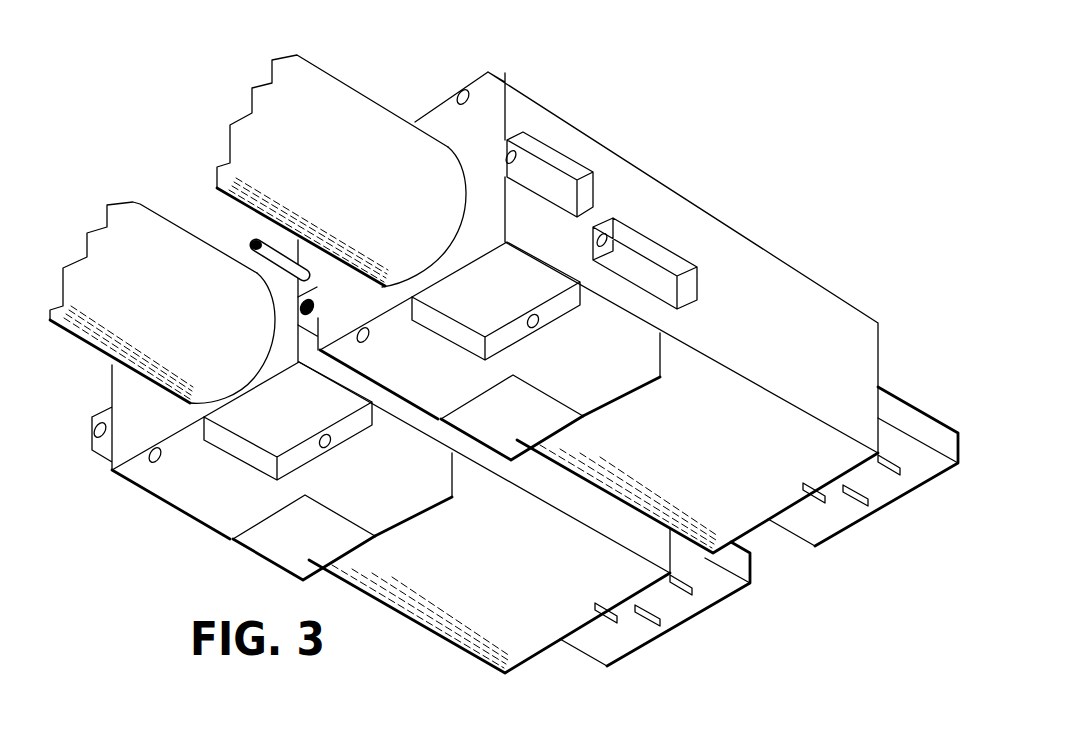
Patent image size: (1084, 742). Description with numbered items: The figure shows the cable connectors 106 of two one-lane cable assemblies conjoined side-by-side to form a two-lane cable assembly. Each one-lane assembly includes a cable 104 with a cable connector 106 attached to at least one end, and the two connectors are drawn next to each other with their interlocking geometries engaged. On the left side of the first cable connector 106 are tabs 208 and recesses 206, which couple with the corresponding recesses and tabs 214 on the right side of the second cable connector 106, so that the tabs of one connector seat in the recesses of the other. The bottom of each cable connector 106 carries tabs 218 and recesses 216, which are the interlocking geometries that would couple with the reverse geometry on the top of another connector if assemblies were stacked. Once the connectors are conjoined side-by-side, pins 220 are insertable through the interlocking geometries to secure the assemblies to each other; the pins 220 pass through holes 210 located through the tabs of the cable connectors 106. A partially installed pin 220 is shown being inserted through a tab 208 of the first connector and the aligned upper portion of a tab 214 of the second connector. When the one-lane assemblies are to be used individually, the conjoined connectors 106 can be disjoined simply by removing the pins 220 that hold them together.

The cable 104 is at (362, 90).
The cable connector 106 is at (778, 255).
The recesses 206 is at (658, 207).
The tabs 208 is at (312, 252).
The holes 210 is at (512, 157).
The tabs 214 is at (298, 323).
The recesses 216 is at (513, 306).
The tabs 218 is at (598, 382).
The pins 220 is at (301, 308).